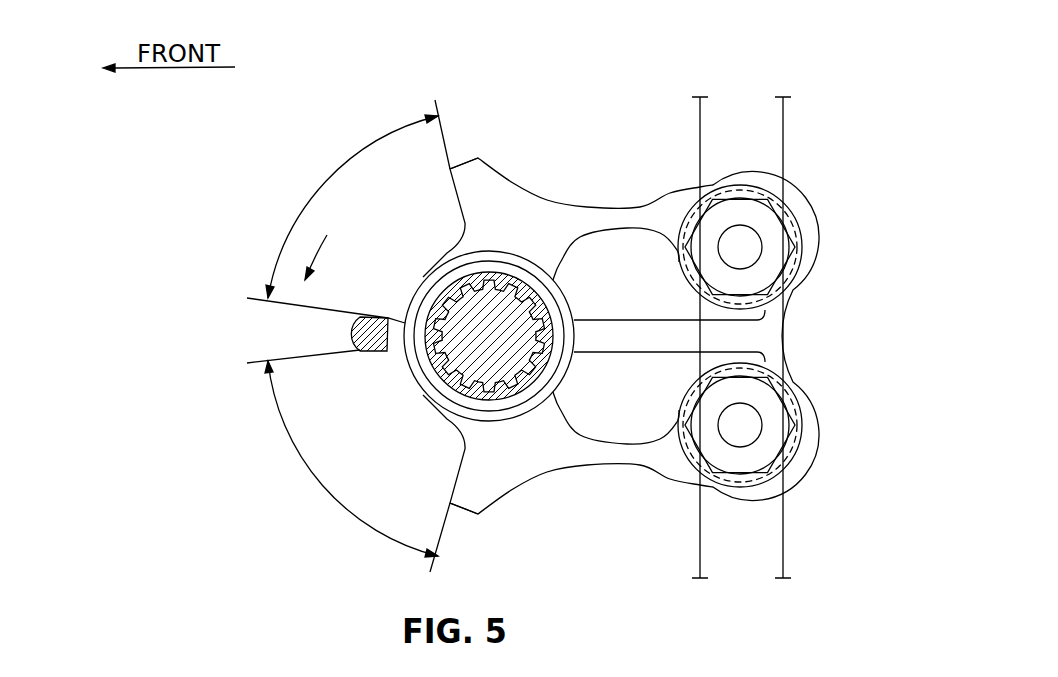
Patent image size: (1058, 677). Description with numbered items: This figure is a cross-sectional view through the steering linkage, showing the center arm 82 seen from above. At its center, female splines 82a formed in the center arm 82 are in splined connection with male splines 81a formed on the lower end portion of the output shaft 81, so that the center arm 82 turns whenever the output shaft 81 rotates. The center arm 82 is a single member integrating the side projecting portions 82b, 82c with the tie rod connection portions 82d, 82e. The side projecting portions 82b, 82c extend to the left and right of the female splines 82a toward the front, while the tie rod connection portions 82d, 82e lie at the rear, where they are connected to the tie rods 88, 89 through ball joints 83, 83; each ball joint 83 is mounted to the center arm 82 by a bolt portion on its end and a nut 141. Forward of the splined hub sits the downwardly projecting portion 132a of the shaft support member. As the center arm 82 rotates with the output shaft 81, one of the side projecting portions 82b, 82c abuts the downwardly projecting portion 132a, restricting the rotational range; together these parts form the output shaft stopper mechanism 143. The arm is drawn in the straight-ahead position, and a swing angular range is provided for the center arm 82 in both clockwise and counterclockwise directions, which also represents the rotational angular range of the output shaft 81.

The center arm 82 is at (598, 204).
The female splines 82a is at (515, 287).
The side projecting portion 82b is at (467, 500).
The side projecting portion 82c is at (465, 173).
The tie rod connection portion 82d is at (786, 475).
The tie rod connection portion 82e is at (795, 208).
The output shaft 81 is at (502, 365).
The male splines 81a is at (487, 392).
The ball joint 83 is at (793, 280).
The nut 141 is at (768, 235).
The tie rod 88 is at (760, 542).
The tie rod 89 is at (768, 130).
The downwardly projecting portion 132a is at (350, 331).
The output shaft stopper mechanism 143 is at (228, 226).